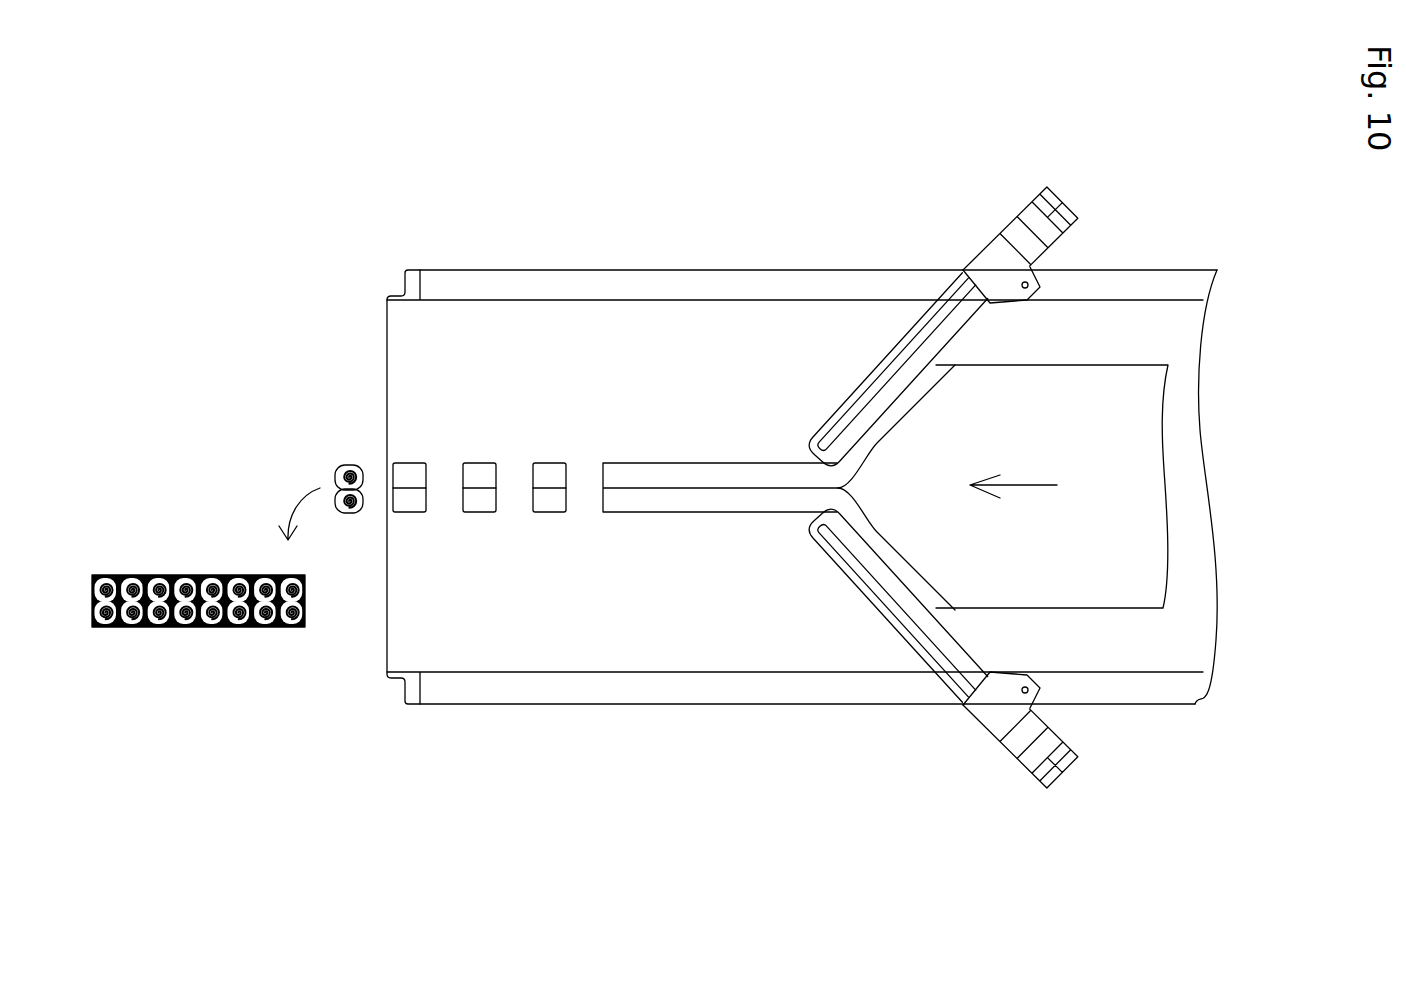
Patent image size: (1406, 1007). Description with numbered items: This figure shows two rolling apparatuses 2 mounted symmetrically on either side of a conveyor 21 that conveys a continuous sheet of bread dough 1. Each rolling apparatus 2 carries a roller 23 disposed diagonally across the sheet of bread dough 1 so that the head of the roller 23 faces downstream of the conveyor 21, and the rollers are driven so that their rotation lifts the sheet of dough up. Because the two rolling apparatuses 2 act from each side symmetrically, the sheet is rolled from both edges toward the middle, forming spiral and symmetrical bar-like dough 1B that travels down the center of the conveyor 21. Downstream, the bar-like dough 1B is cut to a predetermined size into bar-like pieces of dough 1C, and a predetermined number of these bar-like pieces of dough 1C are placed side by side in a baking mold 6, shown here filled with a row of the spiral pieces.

The continuous sheet of bread dough 1 is at (1132, 438).
The bar-like dough 1B is at (648, 513).
The bar-like pieces of dough 1C is at (355, 463).
The rolling apparatus 2 is at (1122, 229).
The baking mold 6 is at (142, 627).
The conveyor 21 is at (578, 267).
The roller 23 is at (892, 350).